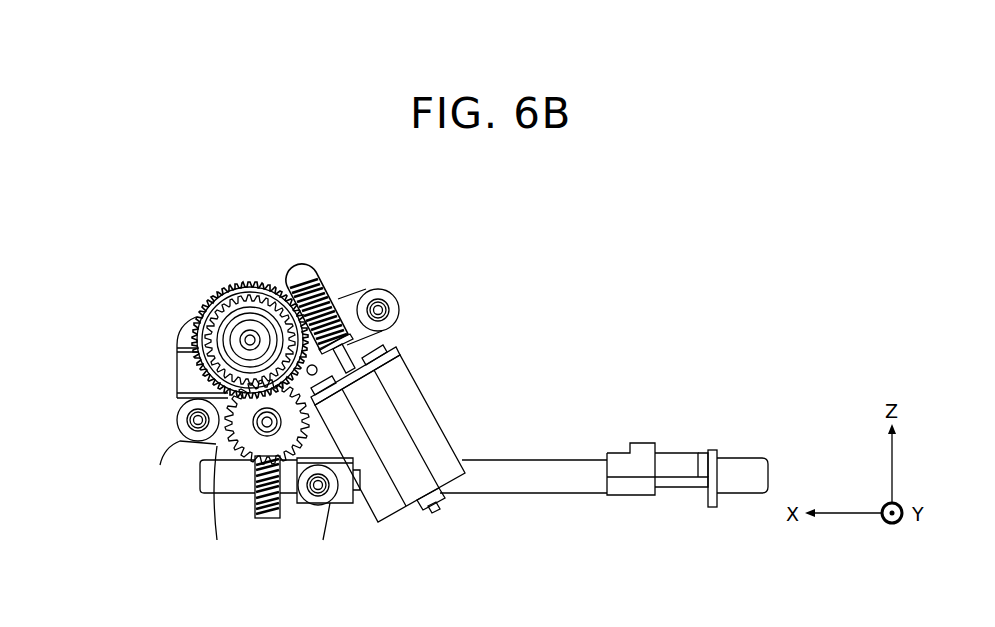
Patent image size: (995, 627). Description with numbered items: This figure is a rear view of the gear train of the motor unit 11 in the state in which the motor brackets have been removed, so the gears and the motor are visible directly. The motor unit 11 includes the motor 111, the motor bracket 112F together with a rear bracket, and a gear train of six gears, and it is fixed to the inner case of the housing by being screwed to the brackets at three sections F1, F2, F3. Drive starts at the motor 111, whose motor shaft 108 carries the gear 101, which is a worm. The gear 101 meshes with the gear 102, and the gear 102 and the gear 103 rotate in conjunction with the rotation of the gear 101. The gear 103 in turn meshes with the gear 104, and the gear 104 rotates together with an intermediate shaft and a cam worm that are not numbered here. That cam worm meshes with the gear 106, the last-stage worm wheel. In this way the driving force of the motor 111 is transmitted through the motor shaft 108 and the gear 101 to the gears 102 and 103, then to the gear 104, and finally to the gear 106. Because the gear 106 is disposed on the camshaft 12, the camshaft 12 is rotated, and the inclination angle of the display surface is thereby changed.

The motor unit 11 is at (160, 294).
The camshaft 12 is at (553, 486).
The gear (worm) 101 is at (318, 274).
The gear 102 is at (232, 278).
The gear 103 is at (252, 338).
The gear 104 is at (240, 441).
The gear (worm wheel) 106 is at (265, 519).
The motor shaft 108 is at (371, 354).
The motor 111 is at (411, 404).
The motor bracket 112F is at (190, 377).
The section F1 is at (180, 437).
The section F2 is at (327, 506).
The section F3 is at (393, 311).